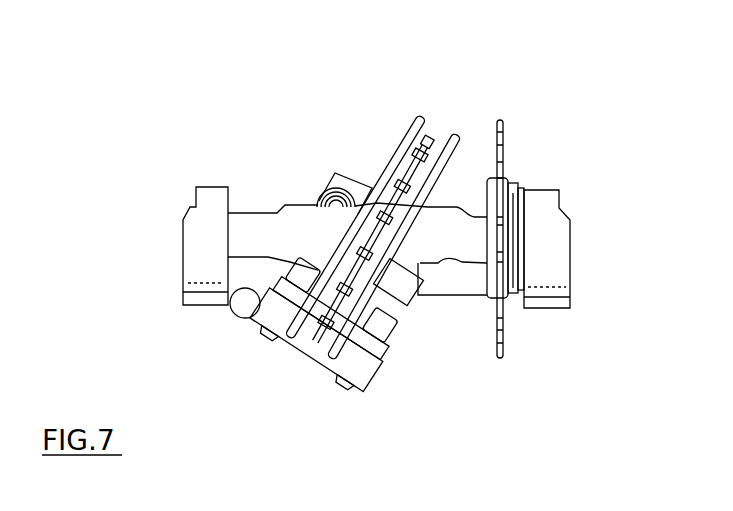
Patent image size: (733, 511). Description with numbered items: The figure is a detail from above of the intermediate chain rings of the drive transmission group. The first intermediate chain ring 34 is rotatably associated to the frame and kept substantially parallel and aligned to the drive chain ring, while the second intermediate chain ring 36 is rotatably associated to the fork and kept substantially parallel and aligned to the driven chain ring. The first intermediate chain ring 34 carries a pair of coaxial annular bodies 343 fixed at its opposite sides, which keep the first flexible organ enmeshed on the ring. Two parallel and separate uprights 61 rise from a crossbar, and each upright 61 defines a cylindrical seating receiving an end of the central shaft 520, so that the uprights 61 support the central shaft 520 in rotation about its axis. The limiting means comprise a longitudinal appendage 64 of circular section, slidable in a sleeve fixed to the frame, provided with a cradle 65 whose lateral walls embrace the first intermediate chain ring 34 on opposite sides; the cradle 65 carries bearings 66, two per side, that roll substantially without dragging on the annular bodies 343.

The first intermediate chain ring 34 is at (433, 133).
The annular bodies 343 is at (412, 130).
The second intermediate chain ring 36 is at (507, 133).
The uprights 61 is at (200, 240).
The longitudinal appendage 64 is at (245, 302).
The cradle 65 is at (362, 370).
The bearings 66 is at (278, 284).
The central shaft 520 is at (447, 250).